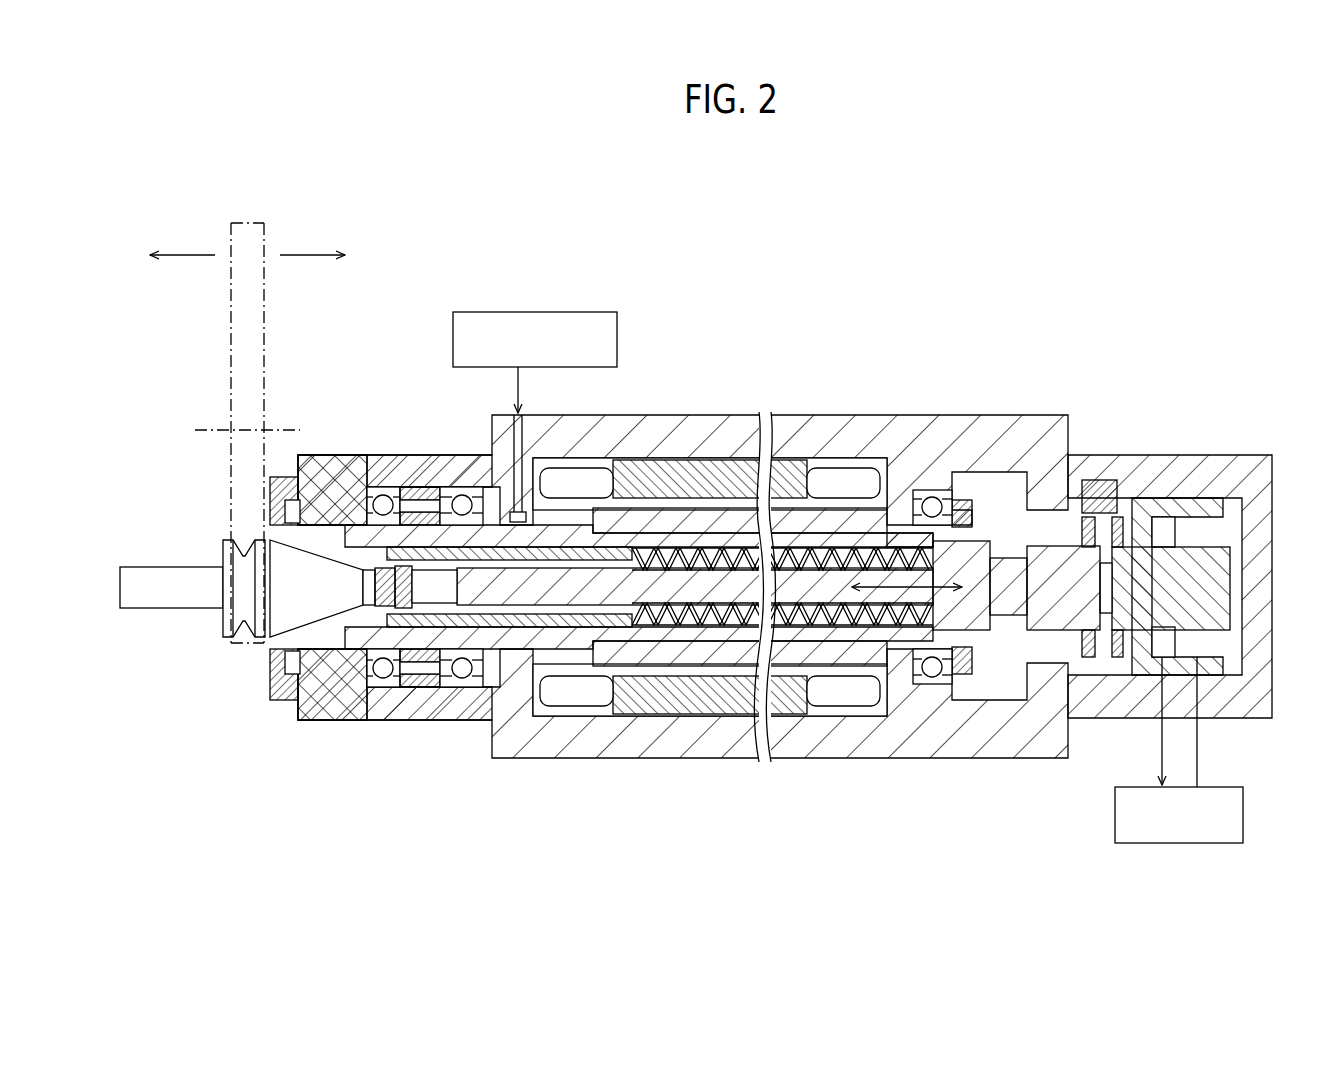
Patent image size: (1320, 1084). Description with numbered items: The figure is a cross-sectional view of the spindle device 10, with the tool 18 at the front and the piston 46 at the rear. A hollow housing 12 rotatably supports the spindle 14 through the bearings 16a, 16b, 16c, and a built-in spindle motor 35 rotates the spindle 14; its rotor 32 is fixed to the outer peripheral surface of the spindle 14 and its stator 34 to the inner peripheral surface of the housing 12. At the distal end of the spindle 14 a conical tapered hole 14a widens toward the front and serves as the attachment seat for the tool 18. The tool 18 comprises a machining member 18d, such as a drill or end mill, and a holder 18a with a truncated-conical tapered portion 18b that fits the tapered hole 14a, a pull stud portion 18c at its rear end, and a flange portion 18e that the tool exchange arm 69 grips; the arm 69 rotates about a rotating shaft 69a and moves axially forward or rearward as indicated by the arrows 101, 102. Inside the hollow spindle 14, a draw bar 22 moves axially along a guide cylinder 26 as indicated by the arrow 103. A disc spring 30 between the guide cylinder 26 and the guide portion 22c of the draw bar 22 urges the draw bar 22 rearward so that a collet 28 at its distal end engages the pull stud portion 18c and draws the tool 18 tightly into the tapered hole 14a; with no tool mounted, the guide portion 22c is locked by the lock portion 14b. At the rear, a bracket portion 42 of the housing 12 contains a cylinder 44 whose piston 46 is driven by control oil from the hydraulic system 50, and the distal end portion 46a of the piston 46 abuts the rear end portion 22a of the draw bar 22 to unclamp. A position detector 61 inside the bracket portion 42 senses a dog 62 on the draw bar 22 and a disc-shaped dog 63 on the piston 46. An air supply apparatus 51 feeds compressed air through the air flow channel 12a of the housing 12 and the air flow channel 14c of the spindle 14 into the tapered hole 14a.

The spindle device 10 is at (730, 528).
The housing 12 is at (696, 415).
The air flow channel 12a is at (536, 415).
The spindle 14 is at (678, 589).
The tapered hole 14a is at (300, 612).
The lock portion 14b is at (1012, 530).
The air flow channel 14c is at (419, 500).
The bearing 16a is at (383, 680).
The bearing 16b is at (463, 680).
The bearing 16c is at (932, 677).
The tool 18 is at (192, 591).
The holder 18a is at (363, 469).
The tapered portion 18b is at (318, 575).
The pull stud portion 18c is at (383, 583).
The machining member 18d is at (158, 600).
The flange portion 18e is at (222, 556).
The draw bar 22 is at (781, 656).
The rear end portion 22a is at (1068, 630).
The guide portion 22c is at (963, 674).
The guide cylinder 26 is at (604, 460).
The collet 28 is at (428, 687).
The disc spring 30 is at (703, 666).
The rotor 32 is at (598, 706).
The stator 34 is at (650, 716).
The spindle motor 35 is at (710, 672).
The bracket portion 42 is at (1232, 470).
The cylinder 44 is at (1205, 505).
The piston 46 is at (1165, 516).
The distal end portion 46a is at (1113, 572).
The hydraulic system 50 is at (1180, 843).
The air supply apparatus 51 is at (575, 312).
The position detector 61 is at (1095, 480).
The dog 62 is at (1085, 517).
The dog 63 is at (1115, 517).
The tool exchange arm 69 is at (217, 433).
The rotating shaft 69a is at (200, 430).
The arrow 101 is at (186, 252).
The arrow 102 is at (316, 252).
The arrow 103 is at (900, 580).